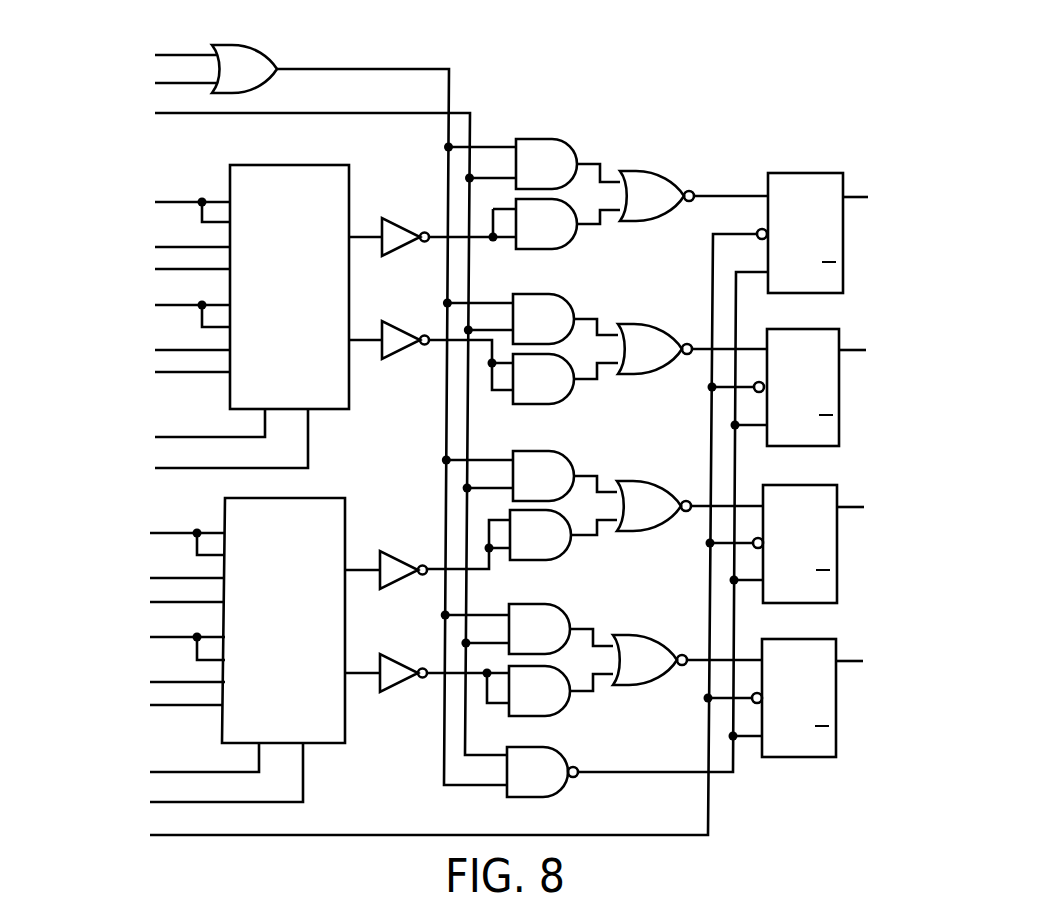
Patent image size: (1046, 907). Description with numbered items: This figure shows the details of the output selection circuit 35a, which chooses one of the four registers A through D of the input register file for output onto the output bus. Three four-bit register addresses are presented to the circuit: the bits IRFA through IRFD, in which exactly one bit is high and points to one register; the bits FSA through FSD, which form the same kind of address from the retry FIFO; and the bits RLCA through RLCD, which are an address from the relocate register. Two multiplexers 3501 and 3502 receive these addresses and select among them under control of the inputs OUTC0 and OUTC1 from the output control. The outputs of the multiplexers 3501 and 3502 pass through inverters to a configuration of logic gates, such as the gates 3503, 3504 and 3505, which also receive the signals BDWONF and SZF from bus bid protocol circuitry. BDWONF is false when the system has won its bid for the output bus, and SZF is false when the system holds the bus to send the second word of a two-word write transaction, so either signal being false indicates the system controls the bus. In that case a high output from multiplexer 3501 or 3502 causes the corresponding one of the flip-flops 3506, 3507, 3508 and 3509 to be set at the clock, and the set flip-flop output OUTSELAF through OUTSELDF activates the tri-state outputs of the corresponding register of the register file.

The output selection circuit 35a is at (820, 792).
The multiplexer 3501 is at (350, 187).
The multiplexer 3502 is at (346, 518).
The logic gate 3503 is at (556, 139).
The logic gate 3504 is at (576, 232).
The logic gate 3505 is at (651, 171).
The flip-flop 3506 is at (816, 173).
The flip-flop 3507 is at (824, 329).
The flip-flop 3508 is at (822, 485).
The flip-flop 3509 is at (821, 639).